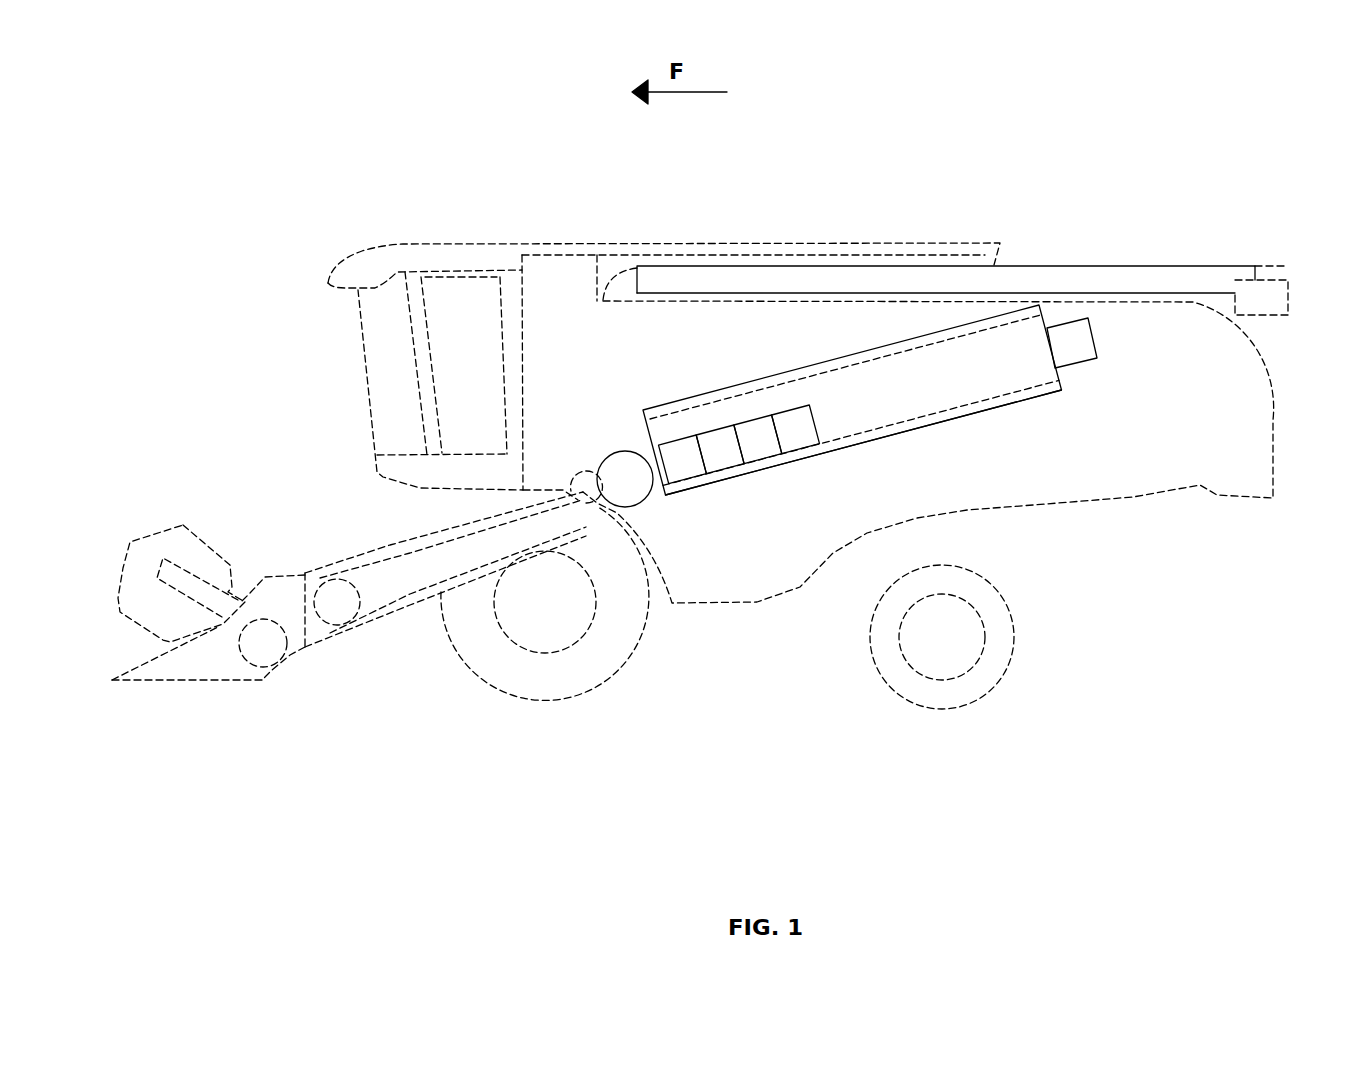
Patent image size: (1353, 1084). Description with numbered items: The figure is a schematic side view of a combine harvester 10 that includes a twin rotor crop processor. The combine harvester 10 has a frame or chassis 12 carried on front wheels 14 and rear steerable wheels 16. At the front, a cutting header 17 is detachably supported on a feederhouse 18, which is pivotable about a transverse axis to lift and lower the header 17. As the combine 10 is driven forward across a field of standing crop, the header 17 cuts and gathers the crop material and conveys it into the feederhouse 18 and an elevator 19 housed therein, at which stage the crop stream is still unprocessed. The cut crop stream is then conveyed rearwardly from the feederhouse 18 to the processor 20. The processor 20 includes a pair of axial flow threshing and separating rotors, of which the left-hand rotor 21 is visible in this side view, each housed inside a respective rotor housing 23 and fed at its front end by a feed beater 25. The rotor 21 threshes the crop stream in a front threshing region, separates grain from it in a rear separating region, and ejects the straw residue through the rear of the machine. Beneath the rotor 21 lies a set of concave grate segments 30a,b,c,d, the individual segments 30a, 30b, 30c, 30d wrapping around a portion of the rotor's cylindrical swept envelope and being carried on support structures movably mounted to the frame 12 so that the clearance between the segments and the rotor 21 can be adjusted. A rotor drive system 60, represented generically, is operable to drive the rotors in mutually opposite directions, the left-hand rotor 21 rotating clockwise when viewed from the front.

The combine harvester 10 is at (1161, 176).
The frame or chassis 12 is at (761, 604).
The front wheels 14 is at (481, 687).
The rear steerable wheels 16 is at (993, 688).
The cutting header 17 is at (234, 683).
The feederhouse 18 is at (352, 558).
The elevator 19 is at (383, 612).
The processor 20 is at (708, 393).
The axial flow threshing and separating rotor 21 is at (793, 378).
The rotor housing 23 is at (990, 410).
The feed beater 25 is at (612, 457).
The concave grate segments 30a,b,c,d is at (780, 465).
The concave grate segment 30a is at (683, 459).
The concave grate segment 30b is at (720, 449).
The concave grate segment 30c is at (758, 439).
The concave grate segment 30d is at (796, 429).
The rotor drive system 60 is at (1080, 345).